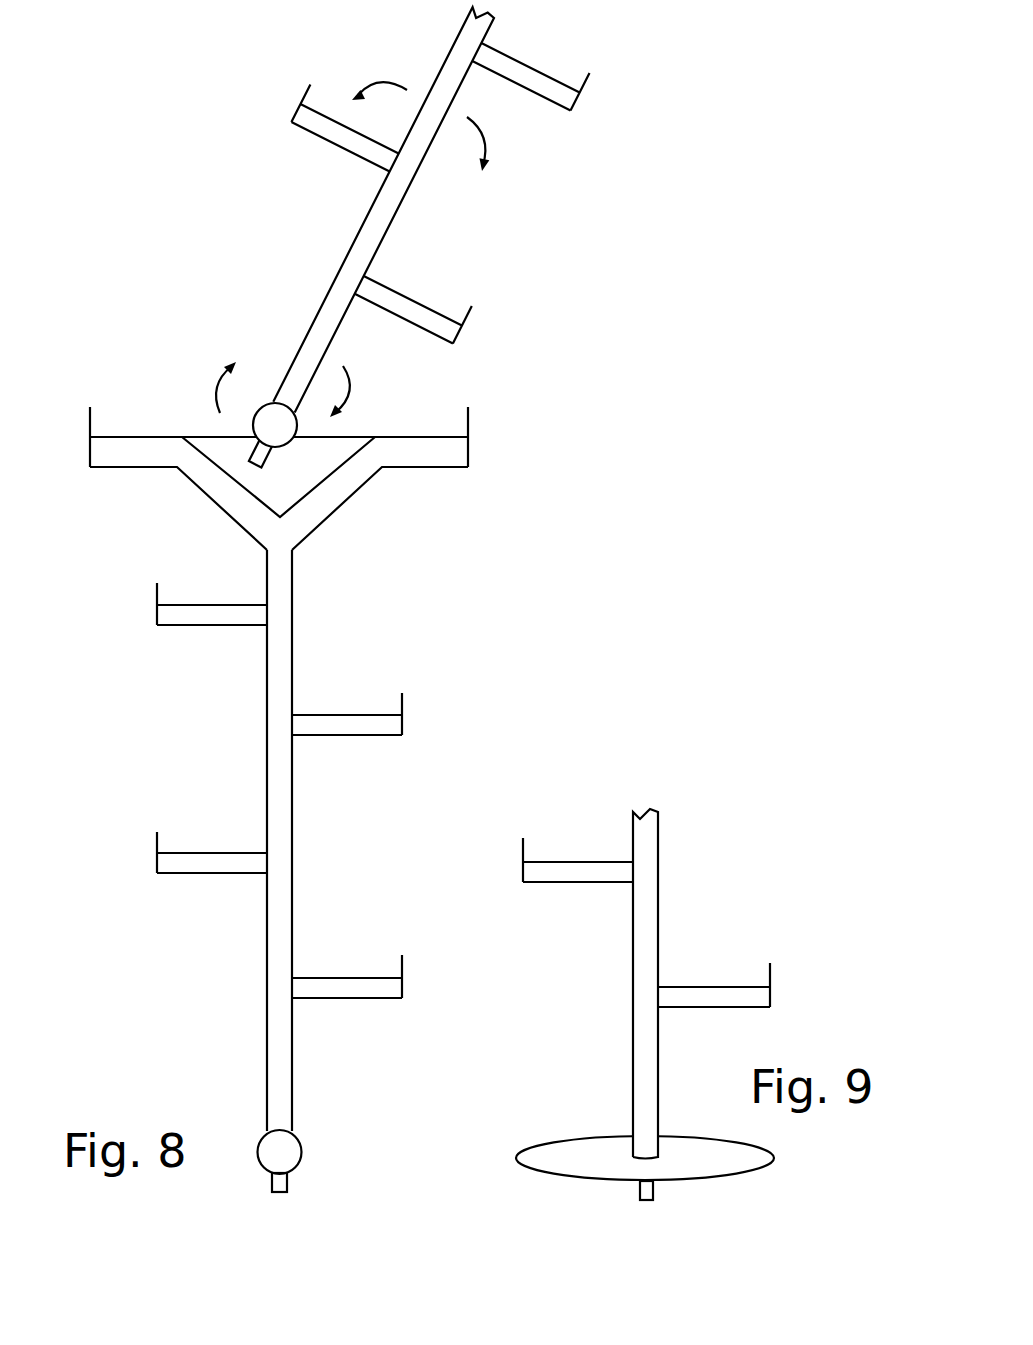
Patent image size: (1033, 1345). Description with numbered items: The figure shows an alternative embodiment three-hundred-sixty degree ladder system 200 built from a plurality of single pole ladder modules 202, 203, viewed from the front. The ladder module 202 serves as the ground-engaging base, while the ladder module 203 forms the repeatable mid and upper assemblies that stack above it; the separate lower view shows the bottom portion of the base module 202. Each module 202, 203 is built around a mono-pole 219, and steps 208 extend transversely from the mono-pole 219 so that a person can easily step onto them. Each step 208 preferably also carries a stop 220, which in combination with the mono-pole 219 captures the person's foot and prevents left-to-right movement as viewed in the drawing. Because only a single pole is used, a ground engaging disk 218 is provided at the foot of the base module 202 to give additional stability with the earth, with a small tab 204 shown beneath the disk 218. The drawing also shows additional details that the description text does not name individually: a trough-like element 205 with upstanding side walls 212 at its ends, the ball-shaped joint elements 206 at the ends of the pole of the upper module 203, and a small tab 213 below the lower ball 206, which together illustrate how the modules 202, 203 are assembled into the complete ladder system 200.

In FIG. 8, the 360 degree ladder system 200 is at (185, 203).
In FIG. 9, the single pole ladder module 202 is at (676, 900).
In FIG. 8, the single pole ladder module 203 is at (440, 49).
In FIG. 9, the bottom tab 204 is at (640, 1195).
In FIG. 8, the trough 205 is at (408, 457).
In FIG. 8, the ball joint 206 is at (268, 416).
In FIG. 8, the step 208 is at (425, 312).
In FIG. 9, the step 208 is at (612, 873).
In FIG. 8, the side wall 212 is at (90, 418).
In FIG. 8, the lower tab 213 is at (288, 1185).
In FIG. 9, the ground engaging disk 218 is at (582, 1148).
In FIG. 8, the mono-pole 219 is at (275, 943).
In FIG. 9, the mono-pole 219 is at (640, 973).
In FIG. 8, the stop 220 is at (155, 592).